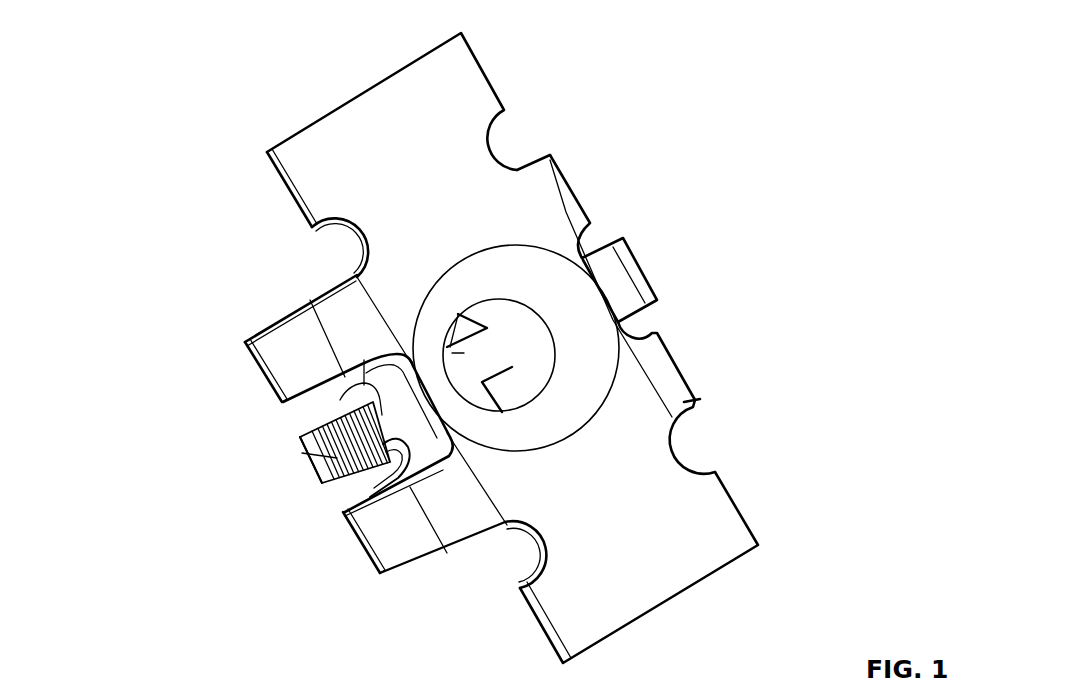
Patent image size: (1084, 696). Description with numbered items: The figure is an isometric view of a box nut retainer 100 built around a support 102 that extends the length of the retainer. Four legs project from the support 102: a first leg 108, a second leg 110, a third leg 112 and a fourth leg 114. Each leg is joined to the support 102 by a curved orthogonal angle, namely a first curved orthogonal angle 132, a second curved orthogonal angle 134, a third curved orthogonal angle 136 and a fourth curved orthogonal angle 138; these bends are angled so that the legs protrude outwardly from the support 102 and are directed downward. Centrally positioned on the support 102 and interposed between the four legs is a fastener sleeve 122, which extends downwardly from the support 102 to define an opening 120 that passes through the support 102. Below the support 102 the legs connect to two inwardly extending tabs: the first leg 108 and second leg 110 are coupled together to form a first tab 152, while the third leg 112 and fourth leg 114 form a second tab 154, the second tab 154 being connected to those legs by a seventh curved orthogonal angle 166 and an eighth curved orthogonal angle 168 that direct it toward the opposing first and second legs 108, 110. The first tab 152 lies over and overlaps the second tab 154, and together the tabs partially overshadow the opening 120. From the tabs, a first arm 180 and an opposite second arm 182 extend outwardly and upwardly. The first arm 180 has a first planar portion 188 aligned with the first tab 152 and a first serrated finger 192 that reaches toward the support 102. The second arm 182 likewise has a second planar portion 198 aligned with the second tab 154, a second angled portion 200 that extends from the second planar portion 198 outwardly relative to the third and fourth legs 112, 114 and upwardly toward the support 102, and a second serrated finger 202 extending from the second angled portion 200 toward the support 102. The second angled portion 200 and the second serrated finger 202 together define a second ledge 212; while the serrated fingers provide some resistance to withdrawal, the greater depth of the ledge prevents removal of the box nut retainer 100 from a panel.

The box nut retainer 100 is at (150, 42).
The support 102 is at (663, 577).
The first leg 108 is at (567, 195).
The second leg 110 is at (670, 370).
The third leg 112 is at (273, 367).
The fourth leg 114 is at (383, 536).
The opening 120 is at (478, 357).
The fastener sleeve 122 is at (530, 358).
The first curved orthogonal angle 132 is at (552, 158).
The second curved orthogonal angle 134 is at (686, 402).
The third curved orthogonal angle 136 is at (332, 302).
The fourth curved orthogonal angle 138 is at (472, 533).
The first tab 152 is at (465, 358).
The second tab 154 is at (486, 388).
The seventh curved orthogonal angle 166 is at (250, 358).
The eighth curved orthogonal angle 168 is at (357, 547).
The first arm 180 is at (633, 263).
The second arm 182 is at (300, 447).
The first planar portion 188 is at (488, 362).
The first serrated finger 192 is at (645, 284).
The second planar portion 198 is at (330, 382).
The second angled portion 200 is at (310, 455).
The second serrated finger 202 is at (330, 480).
The second ledge 212 is at (322, 462).